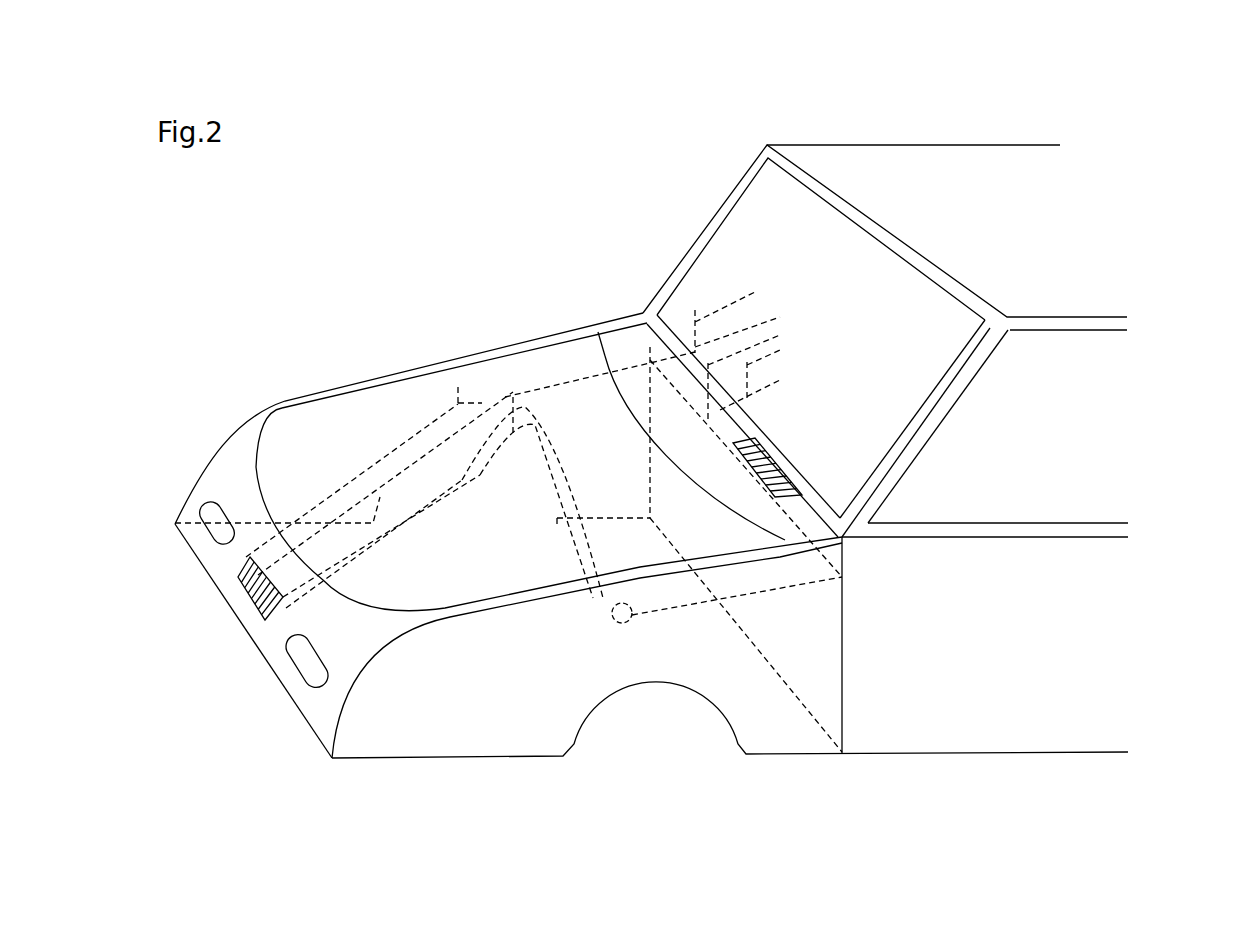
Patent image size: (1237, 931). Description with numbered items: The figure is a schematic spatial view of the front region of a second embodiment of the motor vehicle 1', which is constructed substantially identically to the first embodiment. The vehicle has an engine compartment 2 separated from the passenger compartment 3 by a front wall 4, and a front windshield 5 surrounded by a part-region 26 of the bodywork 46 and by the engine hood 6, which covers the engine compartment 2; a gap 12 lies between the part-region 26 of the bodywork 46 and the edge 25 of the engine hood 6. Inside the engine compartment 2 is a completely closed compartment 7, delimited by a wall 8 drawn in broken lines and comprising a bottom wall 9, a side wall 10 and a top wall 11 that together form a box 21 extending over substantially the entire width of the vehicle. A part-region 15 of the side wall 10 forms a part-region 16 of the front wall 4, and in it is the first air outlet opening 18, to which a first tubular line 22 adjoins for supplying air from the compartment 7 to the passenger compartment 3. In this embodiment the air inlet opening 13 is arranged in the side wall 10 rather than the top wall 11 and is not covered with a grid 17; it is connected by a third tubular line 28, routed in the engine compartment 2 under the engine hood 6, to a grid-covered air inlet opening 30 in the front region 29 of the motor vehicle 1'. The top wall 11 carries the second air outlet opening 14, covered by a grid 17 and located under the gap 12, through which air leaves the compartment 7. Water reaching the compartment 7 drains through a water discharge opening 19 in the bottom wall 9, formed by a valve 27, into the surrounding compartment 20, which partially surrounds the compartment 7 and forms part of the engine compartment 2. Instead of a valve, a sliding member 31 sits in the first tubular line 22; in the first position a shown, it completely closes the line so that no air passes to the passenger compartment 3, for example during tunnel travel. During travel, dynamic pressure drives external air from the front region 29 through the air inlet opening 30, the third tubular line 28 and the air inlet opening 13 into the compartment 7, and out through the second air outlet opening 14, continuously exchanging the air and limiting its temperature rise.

The motor vehicle 1' is at (406, 148).
The engine compartment 2 is at (297, 445).
The passenger compartment 3 is at (725, 250).
The front wall 4 is at (828, 703).
The front windshield 5 is at (745, 212).
The engine hood 6 is at (740, 533).
The compartment 7 is at (546, 398).
The wall 8 is at (605, 597).
The bottom wall 9 is at (780, 568).
The side wall 10 is at (493, 408).
The top wall 11 is at (553, 363).
The gap 12 is at (798, 515).
The air inlet opening 13 is at (487, 405).
The second air outlet opening 14 is at (803, 498).
The part-region of the side wall 15 is at (843, 573).
The part-region of the front wall 16 is at (843, 552).
The grid 17 is at (247, 590).
The first air outlet opening 18 is at (643, 315).
The water discharge opening 19 is at (620, 632).
The surrounding compartment 20 is at (445, 735).
The box 21 is at (707, 603).
The first tubular line 22 is at (692, 397).
The edge of the engine hood 25 is at (601, 337).
The part-region of the bodywork 26 is at (843, 537).
The valve 27 is at (613, 632).
The third tubular line 28 is at (367, 470).
The front region 29 is at (320, 712).
The air inlet opening 30 is at (257, 598).
The sliding member 31 is at (712, 325).
The bodywork 46 is at (762, 163).
The first position a is at (747, 400).